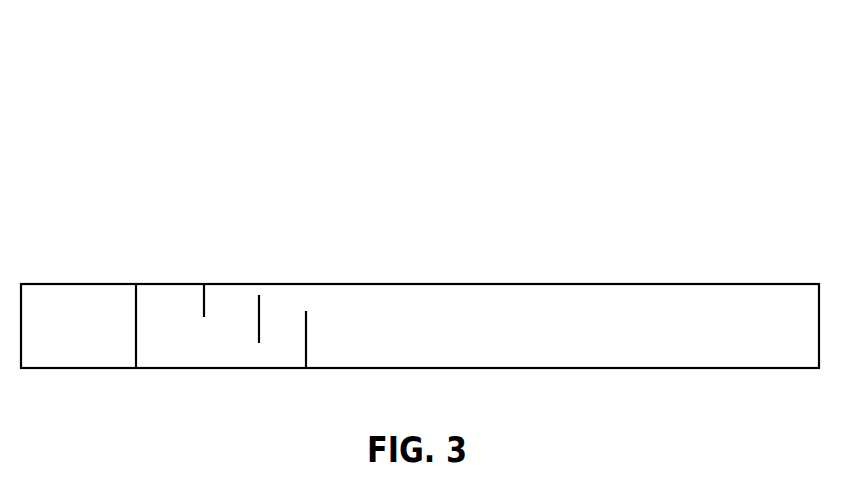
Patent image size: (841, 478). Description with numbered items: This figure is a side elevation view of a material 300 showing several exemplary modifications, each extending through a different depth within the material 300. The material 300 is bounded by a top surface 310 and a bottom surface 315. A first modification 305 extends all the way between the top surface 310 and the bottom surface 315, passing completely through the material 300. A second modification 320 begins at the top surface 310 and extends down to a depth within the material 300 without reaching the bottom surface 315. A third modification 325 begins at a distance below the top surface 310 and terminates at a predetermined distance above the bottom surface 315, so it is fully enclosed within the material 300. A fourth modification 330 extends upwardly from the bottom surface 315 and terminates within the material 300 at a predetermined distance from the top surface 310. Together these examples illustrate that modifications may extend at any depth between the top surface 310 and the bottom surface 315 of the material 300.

The material 300 is at (712, 153).
The modification 305 is at (139, 300).
The top surface 310 is at (575, 284).
The bottom surface 315 is at (599, 368).
The modification 320 is at (205, 298).
The modification 325 is at (260, 296).
The modification 330 is at (308, 335).